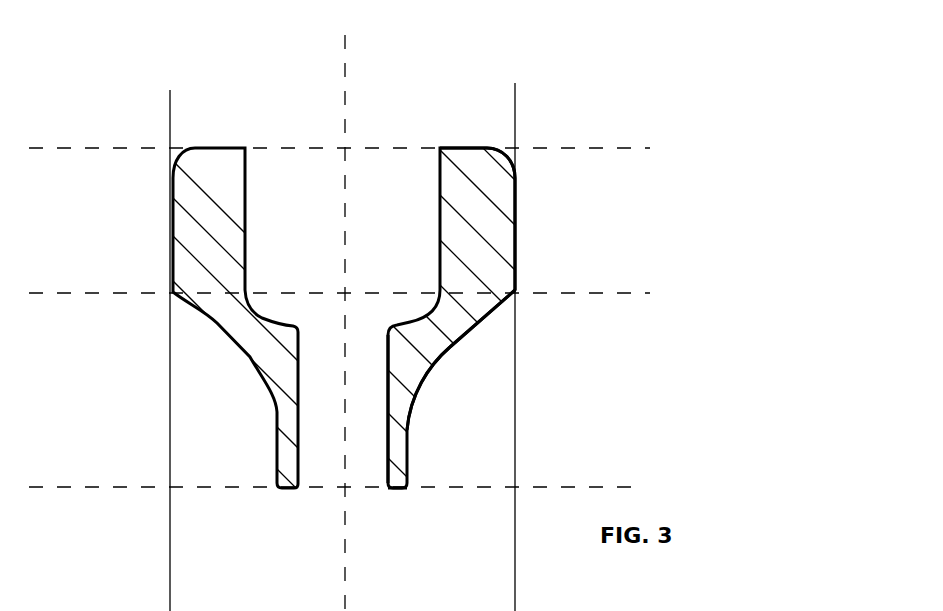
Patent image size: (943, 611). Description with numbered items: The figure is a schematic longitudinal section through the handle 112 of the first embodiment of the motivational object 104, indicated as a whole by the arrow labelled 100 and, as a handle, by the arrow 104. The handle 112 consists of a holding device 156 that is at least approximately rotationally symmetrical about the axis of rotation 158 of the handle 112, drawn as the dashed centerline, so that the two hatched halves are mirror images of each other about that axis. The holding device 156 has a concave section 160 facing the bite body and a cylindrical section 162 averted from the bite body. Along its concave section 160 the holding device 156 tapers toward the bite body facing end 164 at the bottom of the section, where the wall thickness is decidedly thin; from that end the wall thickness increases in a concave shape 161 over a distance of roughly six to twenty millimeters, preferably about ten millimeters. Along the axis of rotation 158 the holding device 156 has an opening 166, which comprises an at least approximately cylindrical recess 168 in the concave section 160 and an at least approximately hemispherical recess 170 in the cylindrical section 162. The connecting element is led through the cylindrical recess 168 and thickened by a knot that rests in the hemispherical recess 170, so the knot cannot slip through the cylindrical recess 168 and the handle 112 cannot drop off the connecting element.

The hook assembly 100 is at (682, 110).
The motivational object 104 is at (546, 330).
The handle 112 is at (497, 178).
The holding device 156 is at (497, 228).
The axis of rotation 158 is at (345, 70).
The concave section 160 is at (433, 328).
The concave shape 161 is at (432, 368).
The cylindrical section 162 is at (497, 193).
The bite body facing end 164 is at (397, 490).
The opening 166 is at (398, 279).
The cylindrical recess 168 is at (368, 387).
The hemispherical recess 170 is at (418, 160).